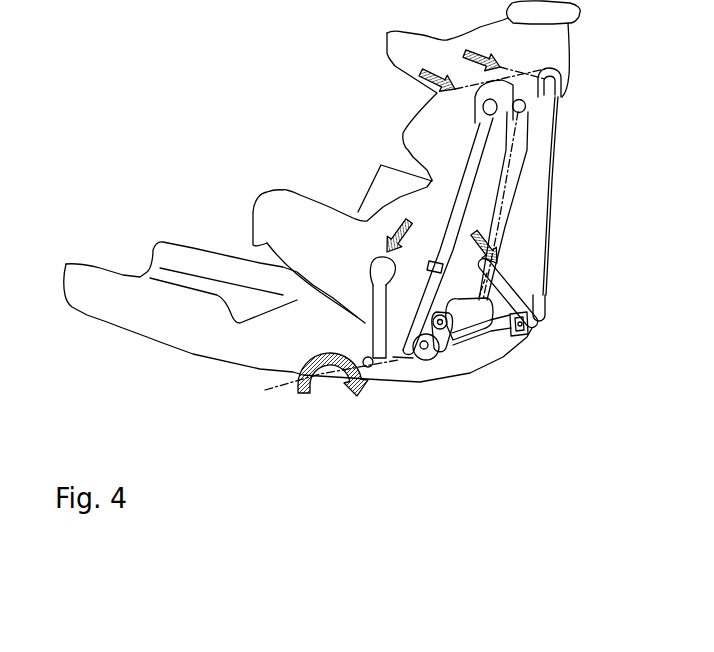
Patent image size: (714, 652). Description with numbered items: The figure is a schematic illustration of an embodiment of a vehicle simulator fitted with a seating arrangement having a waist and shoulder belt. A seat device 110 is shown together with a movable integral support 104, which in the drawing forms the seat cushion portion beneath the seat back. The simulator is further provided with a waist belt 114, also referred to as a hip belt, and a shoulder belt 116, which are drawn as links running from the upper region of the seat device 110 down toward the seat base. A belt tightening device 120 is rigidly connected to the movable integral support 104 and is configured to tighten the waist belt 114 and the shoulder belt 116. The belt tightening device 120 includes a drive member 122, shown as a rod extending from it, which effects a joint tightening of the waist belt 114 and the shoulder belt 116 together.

The movable integral support 104 is at (183, 350).
The seat device 110 is at (563, 47).
The waist belt 114 is at (513, 293).
The shoulder belt 116 is at (555, 100).
The belt tightening device 120 is at (450, 362).
The drive member 122 is at (473, 316).